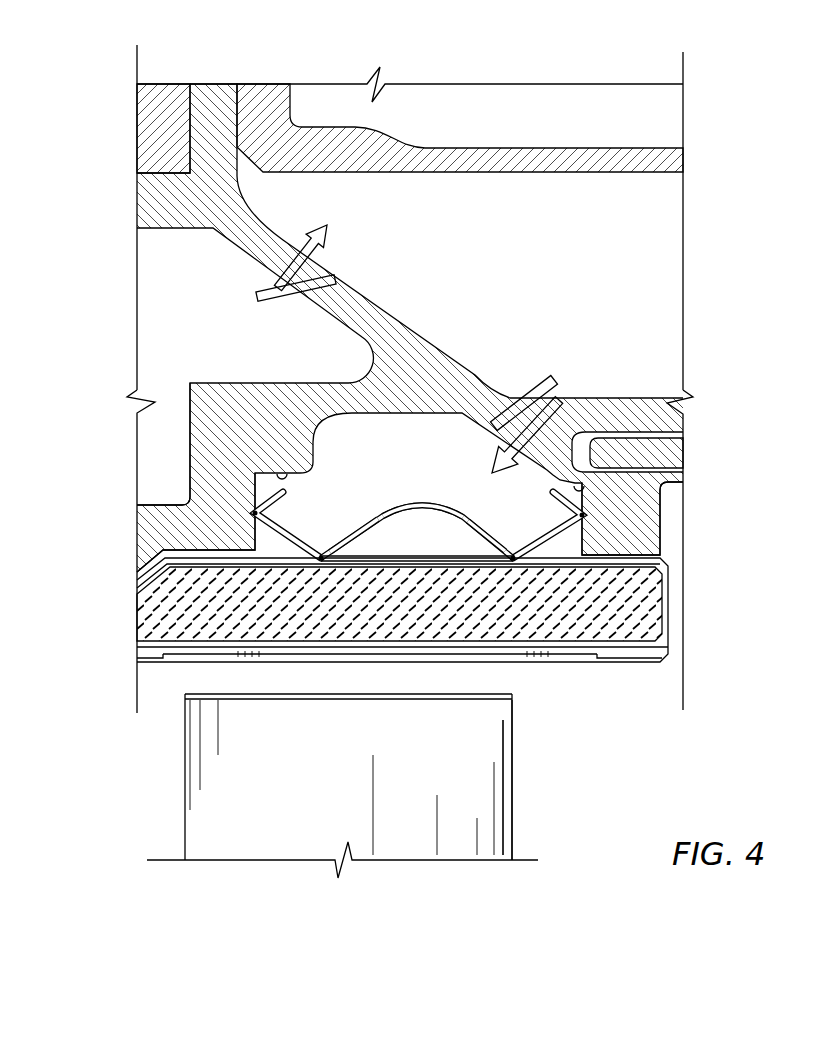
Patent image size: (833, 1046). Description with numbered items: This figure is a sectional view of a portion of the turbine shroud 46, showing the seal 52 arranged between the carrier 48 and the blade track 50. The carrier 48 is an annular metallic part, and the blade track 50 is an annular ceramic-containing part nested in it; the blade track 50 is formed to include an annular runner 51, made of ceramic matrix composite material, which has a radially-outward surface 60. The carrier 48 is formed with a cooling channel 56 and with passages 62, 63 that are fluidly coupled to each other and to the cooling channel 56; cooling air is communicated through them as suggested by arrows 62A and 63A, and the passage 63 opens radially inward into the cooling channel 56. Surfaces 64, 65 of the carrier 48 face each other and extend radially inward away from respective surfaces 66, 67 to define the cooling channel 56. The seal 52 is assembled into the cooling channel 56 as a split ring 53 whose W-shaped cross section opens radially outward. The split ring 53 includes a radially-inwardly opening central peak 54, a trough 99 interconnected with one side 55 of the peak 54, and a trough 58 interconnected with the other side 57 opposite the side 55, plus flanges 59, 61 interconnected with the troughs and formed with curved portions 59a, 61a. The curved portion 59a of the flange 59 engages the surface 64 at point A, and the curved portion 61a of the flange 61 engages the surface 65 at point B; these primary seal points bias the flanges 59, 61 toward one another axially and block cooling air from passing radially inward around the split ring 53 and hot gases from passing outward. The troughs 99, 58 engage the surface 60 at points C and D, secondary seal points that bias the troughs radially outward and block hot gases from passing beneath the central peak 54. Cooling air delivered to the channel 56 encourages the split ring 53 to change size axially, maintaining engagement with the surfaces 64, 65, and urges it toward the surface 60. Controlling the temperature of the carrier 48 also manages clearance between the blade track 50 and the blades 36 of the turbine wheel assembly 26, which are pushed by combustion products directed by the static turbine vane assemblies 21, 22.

The static turbine vane assembly 21 is at (146, 769).
The static turbine vane assembly 22 is at (602, 749).
The turbine wheel assembly 26 is at (514, 804).
The blade 36 is at (305, 739).
The turbine shroud 46 is at (664, 316).
The carrier 48 is at (352, 236).
The blade track 50 is at (702, 600).
The annular runner 51 is at (676, 611).
The seal 52 is at (377, 438).
The split ring 53 is at (393, 505).
The central peak 54 is at (417, 500).
The side of the peak 55 is at (364, 516).
The cooling channel 56 is at (563, 477).
The side of the peak 57 is at (468, 509).
The trough 58 is at (515, 549).
The flange 59 is at (291, 499).
The curved portion 59a is at (254, 514).
The radially-outward surface 60 is at (400, 558).
The flange 61 is at (551, 508).
The curved portion 61a is at (585, 519).
The passage 62 is at (319, 282).
The arrow 62A is at (297, 256).
The passage 63 is at (513, 424).
The arrow 63A is at (554, 390).
The surface 64 is at (258, 487).
The surface 65 is at (669, 482).
The surface 66 is at (276, 473).
The surface 67 is at (573, 482).
The trough 99 is at (323, 551).